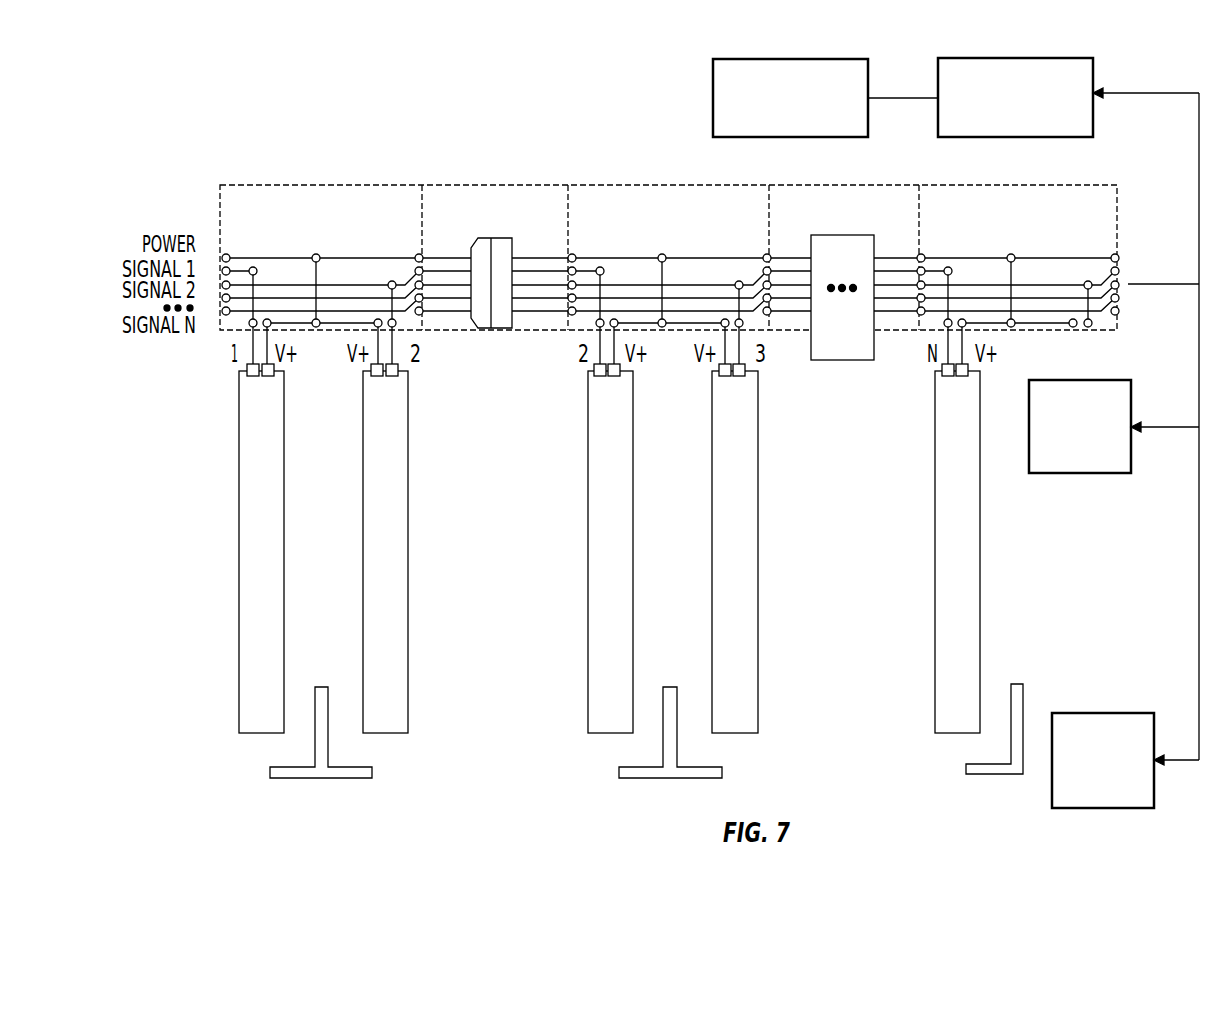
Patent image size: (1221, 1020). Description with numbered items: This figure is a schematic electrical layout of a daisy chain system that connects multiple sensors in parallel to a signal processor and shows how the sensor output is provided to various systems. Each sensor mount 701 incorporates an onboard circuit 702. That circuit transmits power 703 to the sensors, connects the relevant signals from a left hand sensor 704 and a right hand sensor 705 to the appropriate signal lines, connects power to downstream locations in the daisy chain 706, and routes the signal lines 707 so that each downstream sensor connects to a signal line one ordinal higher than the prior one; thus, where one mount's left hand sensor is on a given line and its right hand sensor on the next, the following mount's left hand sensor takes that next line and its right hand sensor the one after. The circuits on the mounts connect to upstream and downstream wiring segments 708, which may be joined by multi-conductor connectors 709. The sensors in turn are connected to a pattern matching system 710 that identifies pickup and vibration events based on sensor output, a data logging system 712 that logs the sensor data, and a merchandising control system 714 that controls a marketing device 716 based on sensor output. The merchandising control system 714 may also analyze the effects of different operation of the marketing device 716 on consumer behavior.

The sensor mount 701 is at (337, 779).
The onboard circuit 702 is at (412, 217).
The power 703 is at (332, 290).
The left hand sensor 704 is at (277, 565).
The right hand sensor 705 is at (401, 565).
The daisy chain downstream power connection 706 is at (403, 248).
The signal lines 707 is at (394, 311).
The wiring segments 708 is at (561, 219).
The multi-conductor connector 709 is at (491, 283).
The pattern matching system 710 is at (1082, 713).
The data logging system 712 is at (1058, 380).
The merchandising control system 714 is at (1050, 58).
The marketing device 716 is at (810, 59).